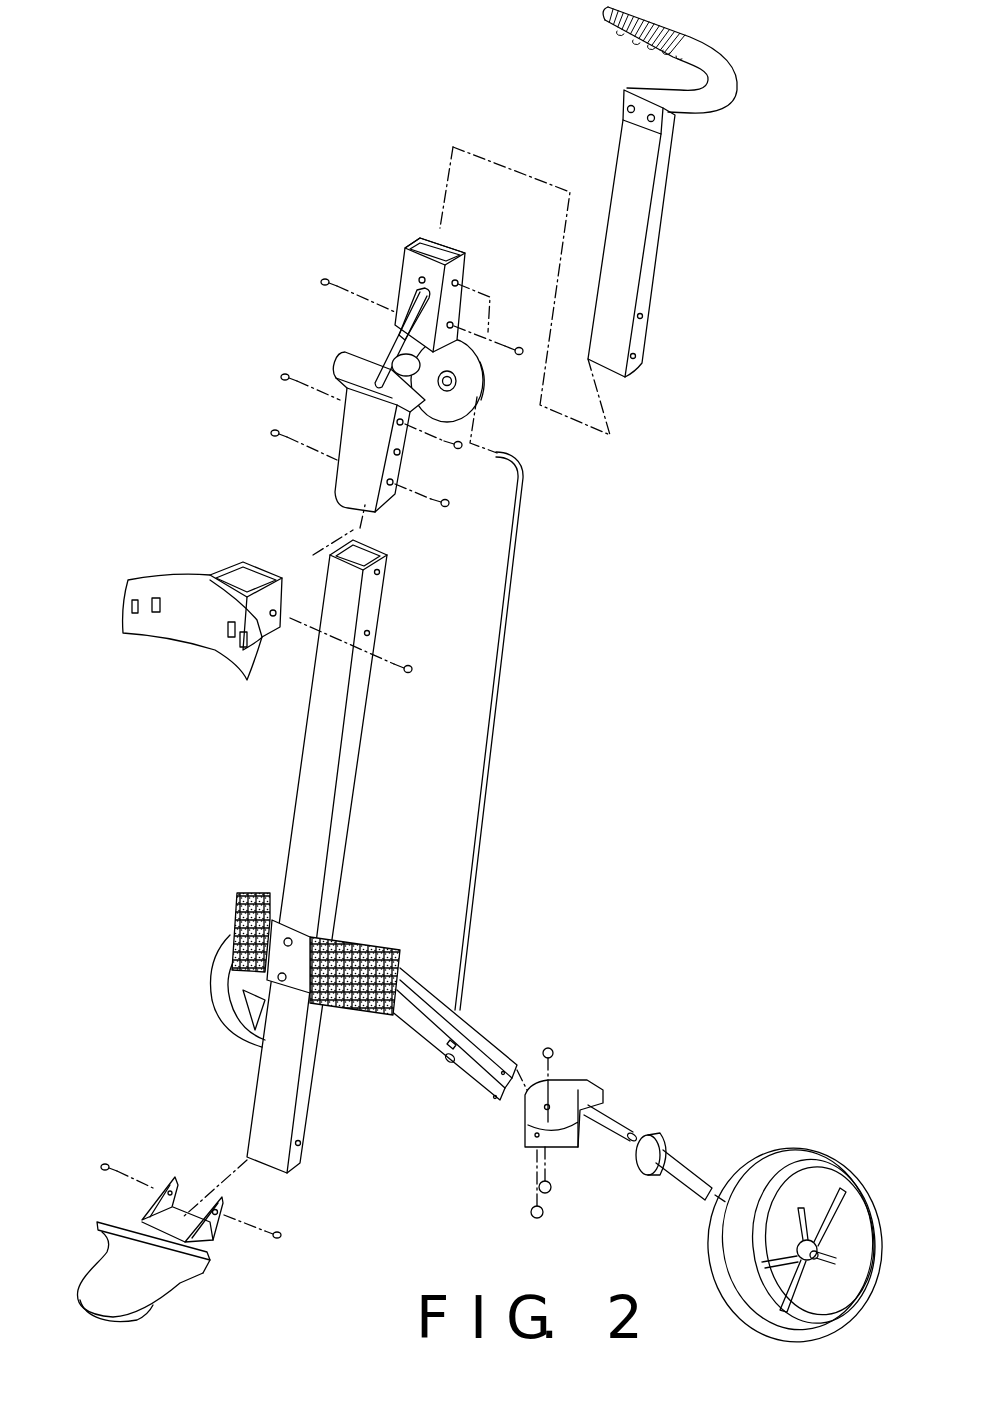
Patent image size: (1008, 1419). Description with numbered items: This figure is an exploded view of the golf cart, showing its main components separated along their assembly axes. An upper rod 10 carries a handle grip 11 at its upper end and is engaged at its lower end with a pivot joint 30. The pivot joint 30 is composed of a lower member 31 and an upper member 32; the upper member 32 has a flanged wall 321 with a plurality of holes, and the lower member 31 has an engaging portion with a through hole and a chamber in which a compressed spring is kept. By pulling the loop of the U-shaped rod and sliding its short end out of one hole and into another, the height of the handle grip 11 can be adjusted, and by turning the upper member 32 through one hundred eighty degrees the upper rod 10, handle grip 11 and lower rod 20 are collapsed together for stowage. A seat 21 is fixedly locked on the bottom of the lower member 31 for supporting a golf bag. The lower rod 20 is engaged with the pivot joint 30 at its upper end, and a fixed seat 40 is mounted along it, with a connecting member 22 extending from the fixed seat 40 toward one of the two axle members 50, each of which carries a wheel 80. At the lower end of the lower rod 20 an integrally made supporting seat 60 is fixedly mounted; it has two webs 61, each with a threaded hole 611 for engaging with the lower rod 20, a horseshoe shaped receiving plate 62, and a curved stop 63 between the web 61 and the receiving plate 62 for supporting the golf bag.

The upper rod 10 is at (628, 267).
The handle grip 11 is at (730, 86).
The lower rod 20 is at (330, 768).
The seat 21 is at (200, 580).
The connecting rod 22 is at (470, 1037).
The pivot joint 30 is at (340, 230).
The lower member 31 is at (386, 492).
The upper member 32 is at (470, 258).
The flanged wall 321 is at (405, 276).
The fixed seat 40 is at (327, 1008).
The axle member 50 is at (618, 1076).
The supporting seat 60 is at (115, 1140).
The web 61 is at (188, 1183).
The threaded hole 611 is at (222, 1218).
The receiving plate 62 is at (127, 1277).
The curved stop 63 is at (217, 1243).
The wheel 80 is at (797, 1157).